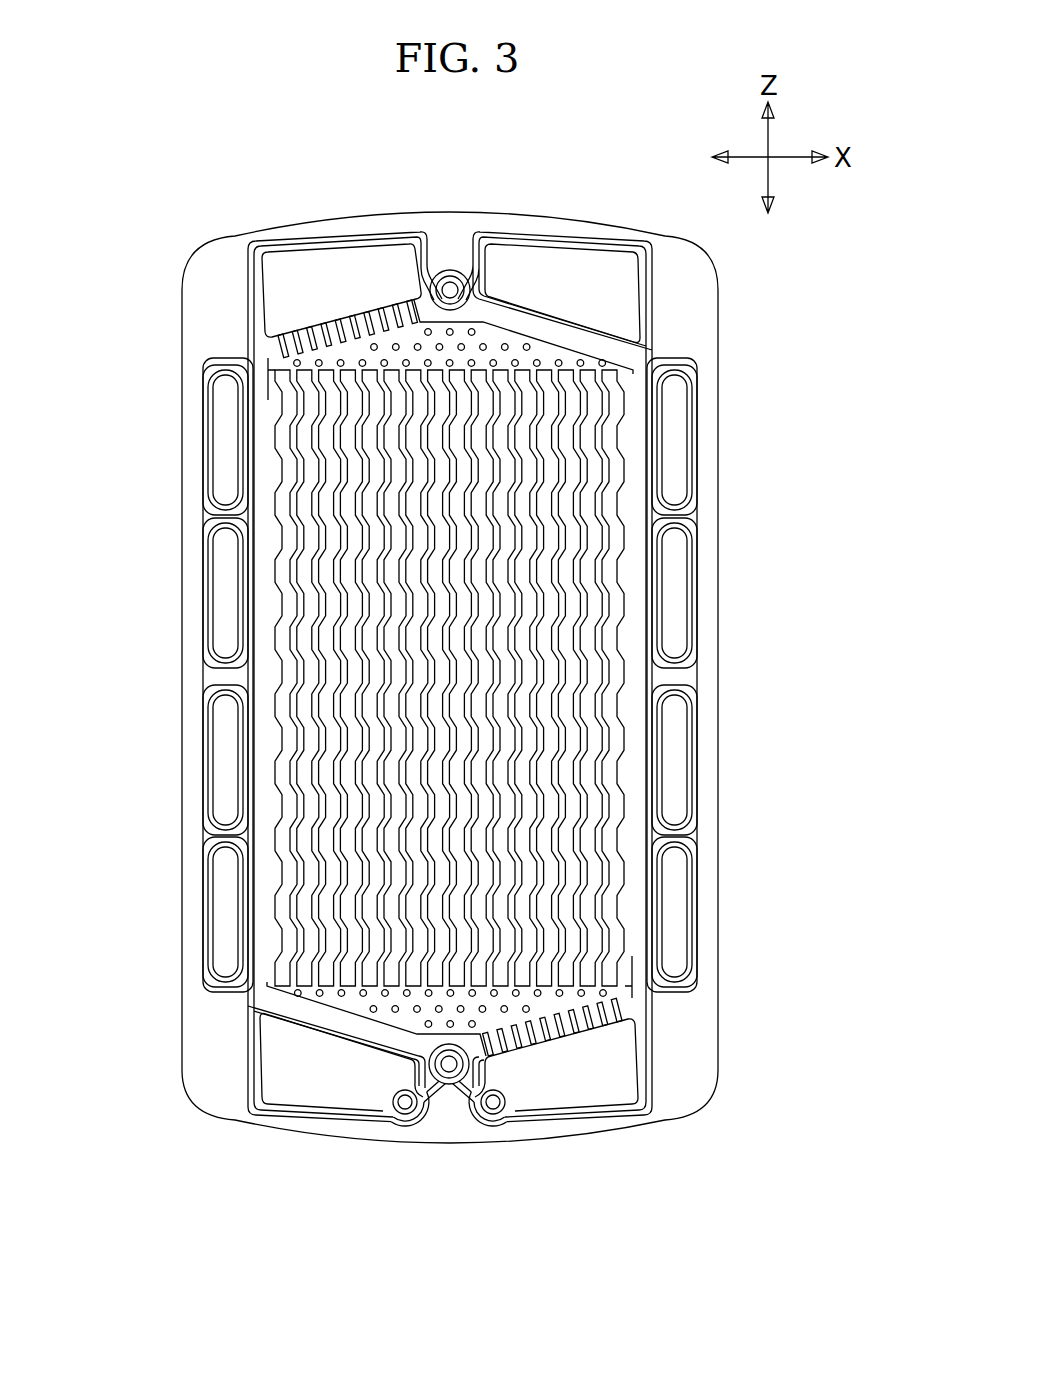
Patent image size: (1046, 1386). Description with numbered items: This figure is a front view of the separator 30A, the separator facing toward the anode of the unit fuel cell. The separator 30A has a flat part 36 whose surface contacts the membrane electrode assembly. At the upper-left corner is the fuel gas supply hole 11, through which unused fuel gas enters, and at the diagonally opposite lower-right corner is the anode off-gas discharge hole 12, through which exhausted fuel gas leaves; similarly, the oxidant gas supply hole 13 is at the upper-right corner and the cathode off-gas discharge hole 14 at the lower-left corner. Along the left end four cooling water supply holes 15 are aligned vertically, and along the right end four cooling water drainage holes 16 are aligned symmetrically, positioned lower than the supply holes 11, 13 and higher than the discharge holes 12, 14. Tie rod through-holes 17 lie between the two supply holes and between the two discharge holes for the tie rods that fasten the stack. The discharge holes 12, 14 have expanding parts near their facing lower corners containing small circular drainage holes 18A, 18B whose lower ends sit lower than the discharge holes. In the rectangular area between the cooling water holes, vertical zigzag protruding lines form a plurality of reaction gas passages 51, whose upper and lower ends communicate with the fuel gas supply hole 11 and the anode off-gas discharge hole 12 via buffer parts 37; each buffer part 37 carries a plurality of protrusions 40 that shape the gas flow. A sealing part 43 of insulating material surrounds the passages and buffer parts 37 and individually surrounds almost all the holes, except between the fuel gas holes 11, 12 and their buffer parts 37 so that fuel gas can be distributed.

The separator 30A is at (204, 176).
The fuel gas supply hole 11 is at (343, 258).
The oxidant gas supply hole 13 is at (566, 258).
The anode off-gas discharge hole 12 is at (566, 1100).
The cathode off-gas discharge hole 14 is at (345, 1100).
The cooling water supply holes 15 is at (213, 557).
The cooling water drainage holes 16 is at (685, 557).
The tie rod through-holes 17 is at (450, 284).
The drainage hole 18A is at (493, 1110).
The drainage hole 18B is at (405, 1110).
The flat part 36 is at (612, 395).
The buffer parts 37 is at (490, 333).
The protrusions 40 is at (507, 345).
The sealing part 43 is at (655, 1065).
The reaction gas passages 51 is at (598, 658).